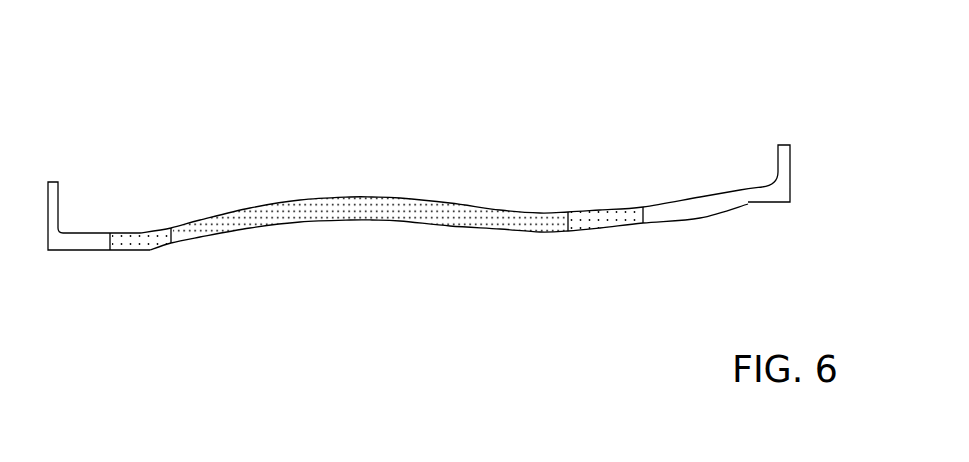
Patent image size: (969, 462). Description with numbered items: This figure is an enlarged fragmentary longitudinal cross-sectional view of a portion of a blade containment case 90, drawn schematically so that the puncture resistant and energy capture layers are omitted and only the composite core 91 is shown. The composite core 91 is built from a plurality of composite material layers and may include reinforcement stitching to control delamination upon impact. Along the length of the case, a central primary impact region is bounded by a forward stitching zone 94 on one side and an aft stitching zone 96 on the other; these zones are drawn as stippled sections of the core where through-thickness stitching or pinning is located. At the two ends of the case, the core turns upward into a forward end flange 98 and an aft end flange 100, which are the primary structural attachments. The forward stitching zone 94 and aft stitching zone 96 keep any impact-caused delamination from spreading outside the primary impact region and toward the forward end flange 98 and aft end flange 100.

The blade containment case 90 is at (145, 63).
The composite core 91 is at (672, 210).
The forward stitching zone 94 is at (140, 243).
The aft stitching zone 96 is at (372, 203).
The forward end flange 98 is at (55, 240).
The aft end flange 100 is at (783, 193).